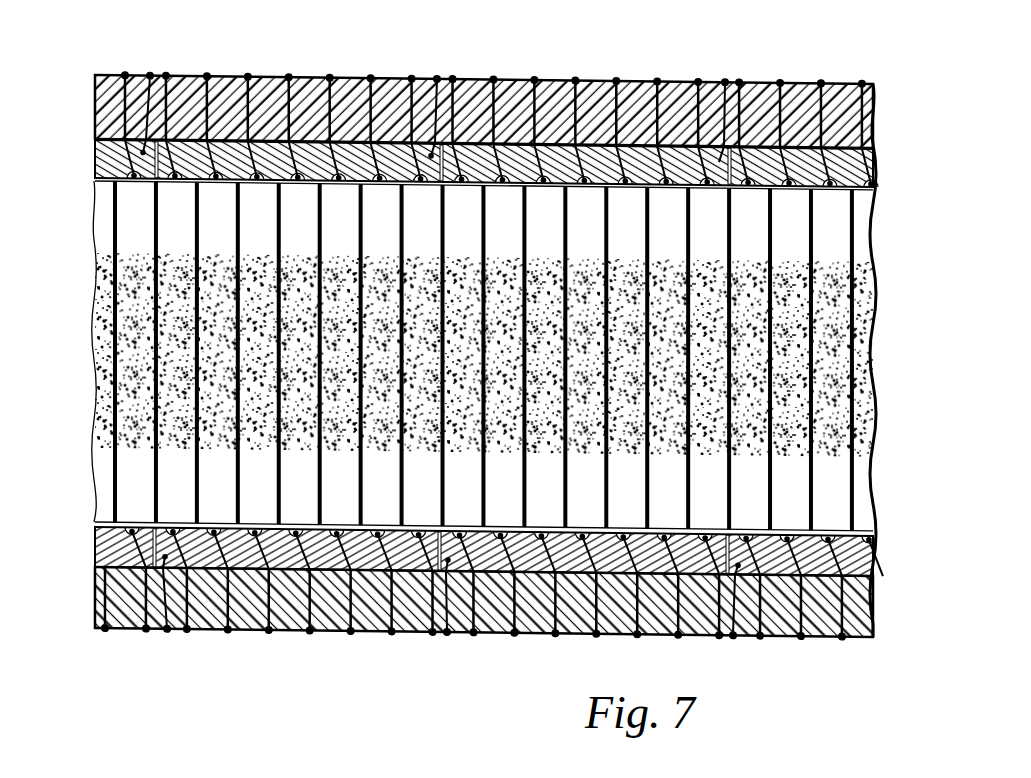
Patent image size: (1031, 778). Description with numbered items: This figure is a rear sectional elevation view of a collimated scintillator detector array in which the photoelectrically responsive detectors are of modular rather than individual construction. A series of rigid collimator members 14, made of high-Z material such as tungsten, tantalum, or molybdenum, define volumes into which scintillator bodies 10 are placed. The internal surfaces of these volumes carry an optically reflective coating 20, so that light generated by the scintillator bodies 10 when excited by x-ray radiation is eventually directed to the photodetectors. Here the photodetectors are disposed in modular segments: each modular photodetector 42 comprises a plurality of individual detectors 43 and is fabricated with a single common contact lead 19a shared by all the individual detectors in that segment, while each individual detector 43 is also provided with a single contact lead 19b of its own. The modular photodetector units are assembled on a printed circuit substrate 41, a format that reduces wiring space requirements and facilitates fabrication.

The scintillator bodies 10 is at (103, 417).
The collimator members 14 is at (110, 378).
The coating 20 is at (113, 217).
The printed circuit substrate 41 is at (875, 107).
The modular photodetectors 42 is at (717, 156).
The individual detectors 43 is at (634, 170).
The common contact lead 19a is at (150, 74).
The contact lead 19b is at (422, 63).